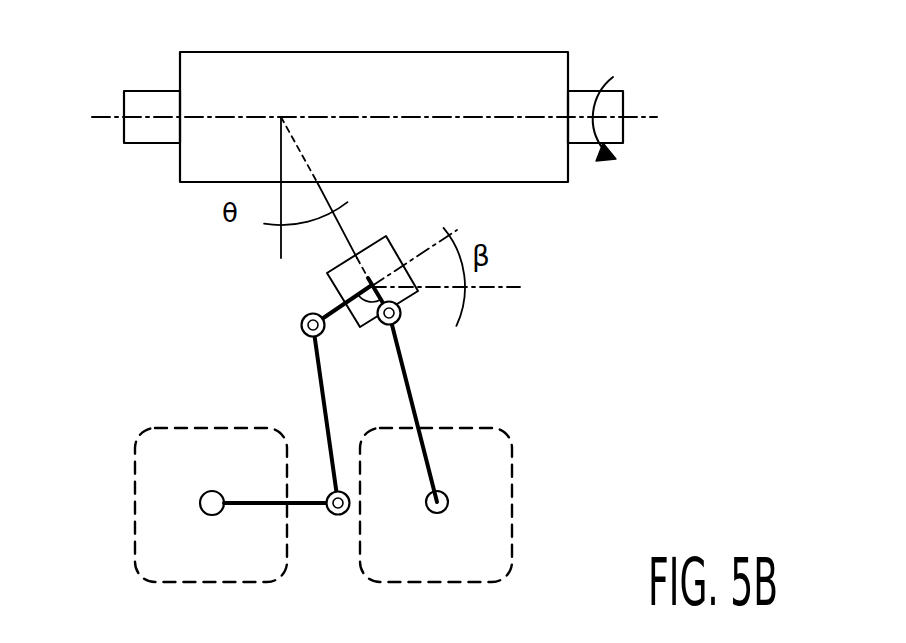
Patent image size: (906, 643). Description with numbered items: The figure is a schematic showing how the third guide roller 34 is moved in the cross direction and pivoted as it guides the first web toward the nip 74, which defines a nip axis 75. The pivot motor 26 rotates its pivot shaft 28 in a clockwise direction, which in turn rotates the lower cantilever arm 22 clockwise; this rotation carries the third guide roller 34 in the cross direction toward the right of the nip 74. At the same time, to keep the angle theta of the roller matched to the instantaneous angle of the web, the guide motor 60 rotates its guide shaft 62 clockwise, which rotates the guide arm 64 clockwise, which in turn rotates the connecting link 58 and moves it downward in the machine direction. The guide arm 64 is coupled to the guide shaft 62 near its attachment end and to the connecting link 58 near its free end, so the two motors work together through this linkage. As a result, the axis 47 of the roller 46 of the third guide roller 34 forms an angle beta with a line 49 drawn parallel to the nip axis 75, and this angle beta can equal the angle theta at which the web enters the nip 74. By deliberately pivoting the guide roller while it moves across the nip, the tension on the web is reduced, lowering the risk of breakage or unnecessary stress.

The lower cantilever arm 22 is at (416, 398).
The pivot motor 26 is at (488, 553).
The pivot shaft 28 is at (446, 498).
The third guide roller 34 is at (399, 216).
The roller 46 is at (343, 280).
The axis 47 is at (422, 252).
The line 49 is at (500, 288).
The connecting link 58 is at (316, 388).
The guide motor 60 is at (147, 542).
The guide shaft 62 is at (200, 498).
The guide arm 64 is at (310, 511).
The nip 74 is at (533, 204).
The nip axis 75 is at (115, 117).